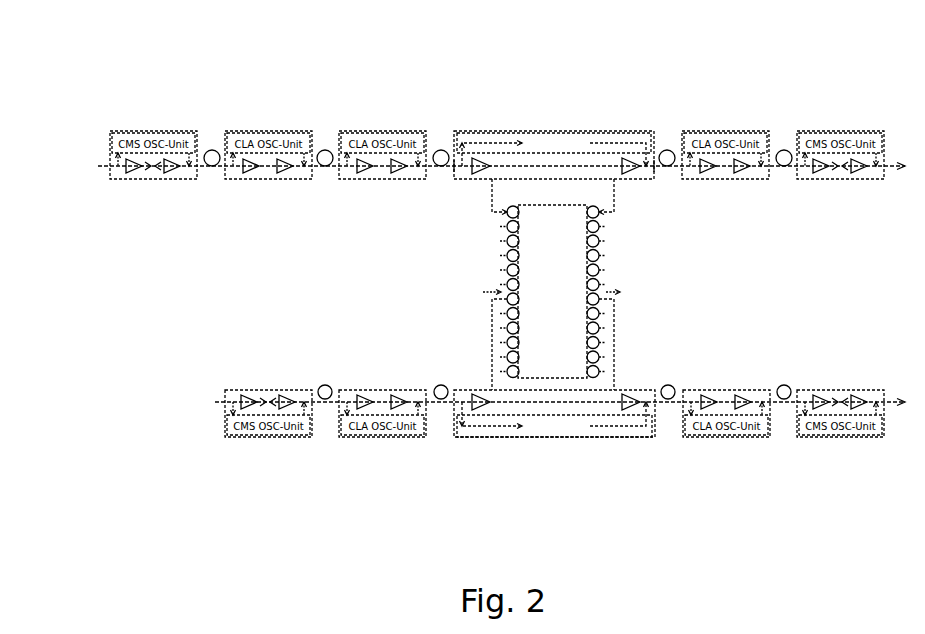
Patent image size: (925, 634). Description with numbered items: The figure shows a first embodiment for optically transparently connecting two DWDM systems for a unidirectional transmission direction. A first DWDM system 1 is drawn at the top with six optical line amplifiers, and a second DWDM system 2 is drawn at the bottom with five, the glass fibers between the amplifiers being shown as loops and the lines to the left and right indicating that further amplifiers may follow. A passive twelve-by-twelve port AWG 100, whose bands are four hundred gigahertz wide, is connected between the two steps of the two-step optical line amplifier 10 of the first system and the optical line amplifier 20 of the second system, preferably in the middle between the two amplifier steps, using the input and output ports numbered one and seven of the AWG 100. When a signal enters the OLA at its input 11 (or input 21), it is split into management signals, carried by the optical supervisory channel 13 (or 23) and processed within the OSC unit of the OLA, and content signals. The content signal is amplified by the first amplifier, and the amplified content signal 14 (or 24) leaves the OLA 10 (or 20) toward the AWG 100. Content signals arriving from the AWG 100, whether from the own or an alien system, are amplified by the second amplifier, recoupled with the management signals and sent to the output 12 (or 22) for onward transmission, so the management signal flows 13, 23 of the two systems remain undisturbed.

The DWDM system 1 is at (501, 145).
The optical line amplifier 10 is at (540, 145).
The input of the OLA 11 is at (455, 140).
The output of the OLA 12 is at (656, 150).
The optical supervisory channel 13 is at (514, 134).
The amplified content signal 14 is at (489, 172).
The N×N AWG 100 is at (600, 268).
The DWDM system 2 is at (560, 425).
The optical line amplifier 20 is at (597, 438).
The input of the OLA 21 is at (450, 403).
The output of the OLA 22 is at (658, 403).
The optical supervisory channel 23 is at (478, 426).
The amplified content signal 24 is at (485, 395).